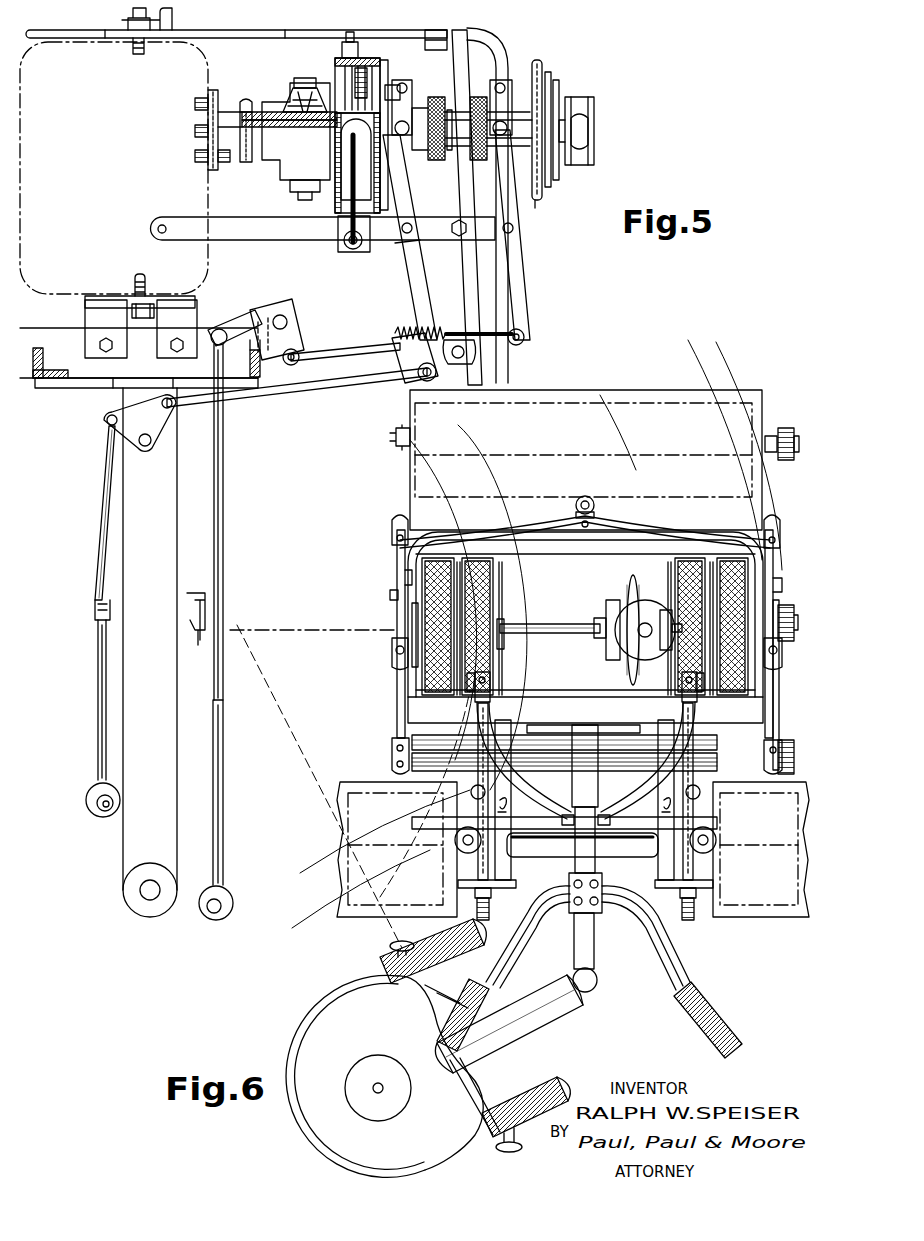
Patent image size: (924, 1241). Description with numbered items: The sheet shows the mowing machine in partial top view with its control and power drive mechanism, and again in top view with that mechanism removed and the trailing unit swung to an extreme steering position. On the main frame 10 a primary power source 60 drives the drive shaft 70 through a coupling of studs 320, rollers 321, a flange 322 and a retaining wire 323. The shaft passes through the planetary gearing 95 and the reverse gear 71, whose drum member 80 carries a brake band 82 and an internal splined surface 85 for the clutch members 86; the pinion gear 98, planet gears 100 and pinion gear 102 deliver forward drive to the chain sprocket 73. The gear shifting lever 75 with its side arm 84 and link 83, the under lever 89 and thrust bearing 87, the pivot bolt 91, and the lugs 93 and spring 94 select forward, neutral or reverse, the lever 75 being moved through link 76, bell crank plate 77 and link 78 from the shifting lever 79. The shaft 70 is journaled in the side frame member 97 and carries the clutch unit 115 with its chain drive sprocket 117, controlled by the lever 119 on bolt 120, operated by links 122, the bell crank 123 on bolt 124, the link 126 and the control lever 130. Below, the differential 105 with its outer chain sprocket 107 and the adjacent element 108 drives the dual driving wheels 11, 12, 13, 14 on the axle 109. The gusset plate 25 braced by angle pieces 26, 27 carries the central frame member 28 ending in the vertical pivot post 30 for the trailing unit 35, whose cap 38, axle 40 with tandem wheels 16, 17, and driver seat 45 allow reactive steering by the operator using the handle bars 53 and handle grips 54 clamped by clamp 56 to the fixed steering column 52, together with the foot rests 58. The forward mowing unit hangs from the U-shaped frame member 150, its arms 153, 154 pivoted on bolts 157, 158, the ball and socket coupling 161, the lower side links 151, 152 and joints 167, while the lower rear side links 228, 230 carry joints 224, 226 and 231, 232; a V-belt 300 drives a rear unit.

In FIG. 5, the primary power source 60 is at (212, 68).
In FIG. 5, the drive shaft 70 is at (276, 100).
In FIG. 5, the planetary gearing 95 is at (306, 84).
In FIG. 5, the reverse gear 71 is at (377, 56).
In FIG. 5, the drum member 80 is at (382, 66).
In FIG. 5, the splined surface 85 is at (380, 78).
In FIG. 5, the clutch members 86 is at (386, 90).
In FIG. 5, the side frame member 97 is at (462, 74).
In FIG. 5, the clutch unit 115 is at (548, 70).
In FIG. 5, the studs 320 is at (198, 102).
In FIG. 5, the rollers 321 is at (198, 155).
In FIG. 5, the flange 322 is at (208, 168).
In FIG. 5, the wire 323 is at (222, 172).
In FIG. 5, the pinion gear 102 is at (284, 122).
In FIG. 5, the planet gears 100 is at (302, 128).
In FIG. 5, the pinion gear 98 is at (330, 135).
In FIG. 5, the chain sprocket 73 is at (247, 164).
In FIG. 5, the brake band 82 is at (325, 200).
In FIG. 5, the thrust bearing 87 is at (420, 160).
In FIG. 5, the under lever 89 is at (405, 190).
In FIG. 5, the chain drive sprocket 117 is at (540, 200).
In FIG. 5, the link 83 is at (350, 236).
In FIG. 5, the side arm 84 is at (377, 240).
In FIG. 5, the gear shifting lever 75 is at (408, 256).
In FIG. 5, the bolt 91 is at (410, 233).
In FIG. 5, the bolt 120 is at (513, 231).
In FIG. 5, the lever 119 is at (513, 255).
In FIG. 5, the bolt 124 is at (283, 314).
In FIG. 5, the bell crank 123 is at (295, 342).
In FIG. 5, the lugs 93 is at (440, 328).
In FIG. 5, the spring 94 is at (396, 329).
In FIG. 5, the links 122 is at (335, 352).
In FIG. 5, the angle piece 26 is at (43, 352).
In FIG. 5, the gusset plate 25 is at (82, 386).
In FIG. 5, the angle piece 27 is at (262, 372).
In FIG. 5, the link 76 is at (337, 392).
In FIG. 5, the bell crank plate 77 is at (165, 420).
In FIG. 5, the link 78 is at (100, 518).
In FIG. 5, the main frame 10 is at (142, 546).
In FIG. 6, the main frame 10 is at (598, 944).
In FIG. 5, the link 126 is at (224, 512).
In FIG. 5, the shifting lever 79 is at (98, 654).
In FIG. 5, the central frame member 28 is at (140, 678).
In FIG. 6, the central frame member 28 is at (595, 932).
In FIG. 5, the control lever 130 is at (216, 688).
In FIG. 5, the vertical pivot post 30 is at (133, 890).
In FIG. 6, the ball and socket coupling 161 is at (590, 497).
In FIG. 6, the ball and socket joints 167 is at (392, 536).
In FIG. 6, the lower side link 151 is at (776, 545).
In FIG. 6, the lower side link 152 is at (397, 558).
In FIG. 6, the pivot bolt 158 is at (400, 576).
In FIG. 6, the arm 154 is at (398, 590).
In FIG. 6, the arm 153 is at (775, 566).
In FIG. 6, the pivot bolt 157 is at (780, 585).
In FIG. 6, the driving wheel 14 is at (437, 560).
In FIG. 6, the driving wheel 13 is at (484, 561).
In FIG. 6, the driving wheel 12 is at (690, 570).
In FIG. 6, the driving wheel 11 is at (732, 568).
In FIG. 6, the U-shaped frame member 150 is at (612, 522).
In FIG. 6, the differential 105 is at (646, 606).
In FIG. 6, the axle 109 is at (546, 624).
In FIG. 6, the outer chain sprocket 107 is at (628, 680).
In FIG. 6, the chain 108 is at (710, 645).
In FIG. 6, the ball and socket joint 231 is at (395, 660).
In FIG. 6, the ball and socket joint 232 is at (780, 655).
In FIG. 6, the lower rear side link 228 is at (406, 690).
In FIG. 6, the lower rear side link 230 is at (775, 706).
In FIG. 6, the ball and socket joint 224 is at (392, 756).
In FIG. 6, the ball and socket joint 226 is at (778, 770).
In FIG. 6, the V-belt 300 is at (492, 782).
In FIG. 6, the trailing wheel 17 is at (436, 940).
In FIG. 6, the foot rests 58 is at (540, 850).
In FIG. 6, the fixed steering column 52 is at (584, 857).
In FIG. 6, the clamp 56 is at (600, 886).
In FIG. 6, the trailing unit 35 is at (362, 960).
In FIG. 6, the handle bars 53 is at (516, 938).
In FIG. 6, the handle grips 54 is at (482, 1004).
In FIG. 6, the cap 38 is at (592, 992).
In FIG. 6, the driver seat 45 is at (298, 1040).
In FIG. 6, the axle 40 is at (498, 1066).
In FIG. 6, the trailing wheel 16 is at (545, 1082).